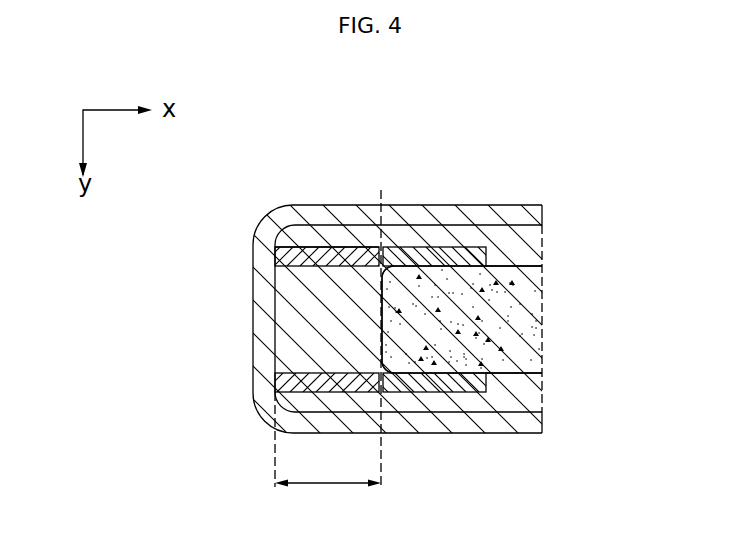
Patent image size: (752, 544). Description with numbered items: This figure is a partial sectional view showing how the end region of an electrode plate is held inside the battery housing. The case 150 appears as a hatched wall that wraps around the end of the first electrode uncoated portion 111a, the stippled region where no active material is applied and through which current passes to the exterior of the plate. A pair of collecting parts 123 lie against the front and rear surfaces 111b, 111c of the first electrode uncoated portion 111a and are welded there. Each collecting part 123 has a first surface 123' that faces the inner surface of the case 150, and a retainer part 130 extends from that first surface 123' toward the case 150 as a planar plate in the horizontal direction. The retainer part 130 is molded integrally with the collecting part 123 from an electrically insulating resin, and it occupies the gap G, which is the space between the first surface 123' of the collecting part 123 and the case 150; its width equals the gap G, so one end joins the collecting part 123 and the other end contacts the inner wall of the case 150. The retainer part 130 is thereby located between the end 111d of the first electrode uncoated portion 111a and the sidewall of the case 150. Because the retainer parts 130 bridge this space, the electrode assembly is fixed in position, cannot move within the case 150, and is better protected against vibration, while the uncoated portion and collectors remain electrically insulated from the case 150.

The case 150 is at (419, 215).
The first surface 123' is at (322, 202).
The collecting part 123 is at (454, 374).
The retainer part 130 is at (319, 260).
The first electrode uncoated portion 111a is at (530, 314).
The front surface 111b is at (512, 373).
The rear surface 111c is at (512, 265).
The end 111d is at (388, 321).
The gap G is at (328, 351).